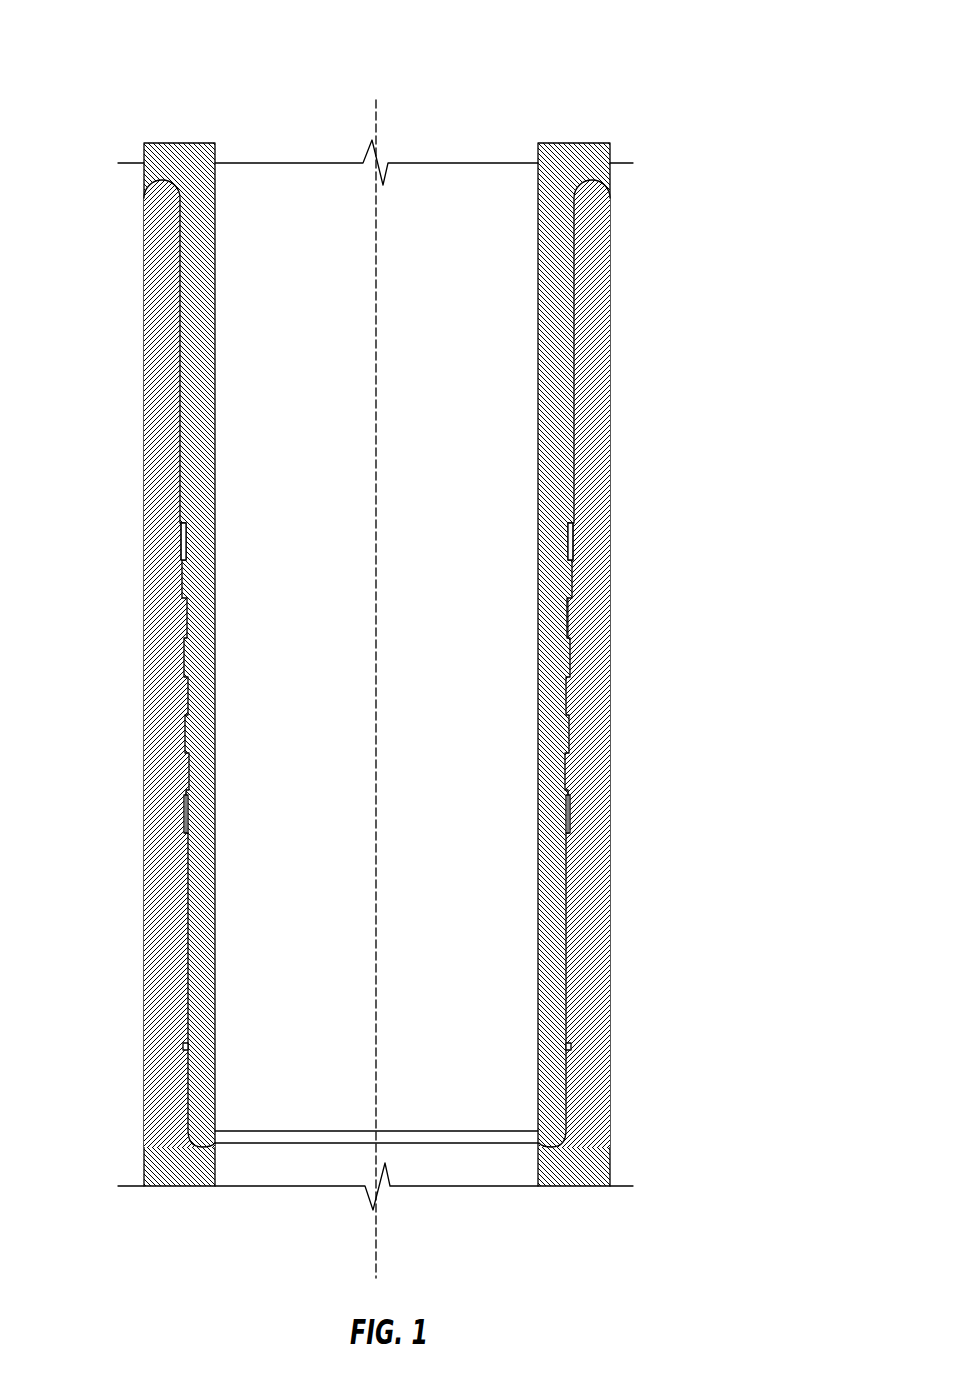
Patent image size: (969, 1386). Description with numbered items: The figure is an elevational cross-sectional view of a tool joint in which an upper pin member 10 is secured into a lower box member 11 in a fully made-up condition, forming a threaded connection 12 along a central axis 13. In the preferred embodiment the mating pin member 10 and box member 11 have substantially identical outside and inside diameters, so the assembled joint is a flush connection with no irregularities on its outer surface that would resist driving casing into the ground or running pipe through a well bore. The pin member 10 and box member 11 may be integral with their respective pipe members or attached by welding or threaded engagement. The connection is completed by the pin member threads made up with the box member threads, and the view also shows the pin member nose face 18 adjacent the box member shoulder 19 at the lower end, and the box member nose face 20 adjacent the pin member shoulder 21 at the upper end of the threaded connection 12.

The pin member 10 is at (146, 180).
The box member 11 is at (612, 915).
The threaded connection 12 is at (556, 44).
The axis 13 is at (370, 122).
The pin member nose face 18 is at (554, 1138).
The box member shoulder 19 is at (553, 1150).
The box member nose face 20 is at (589, 184).
The pin member shoulder 21 is at (602, 190).